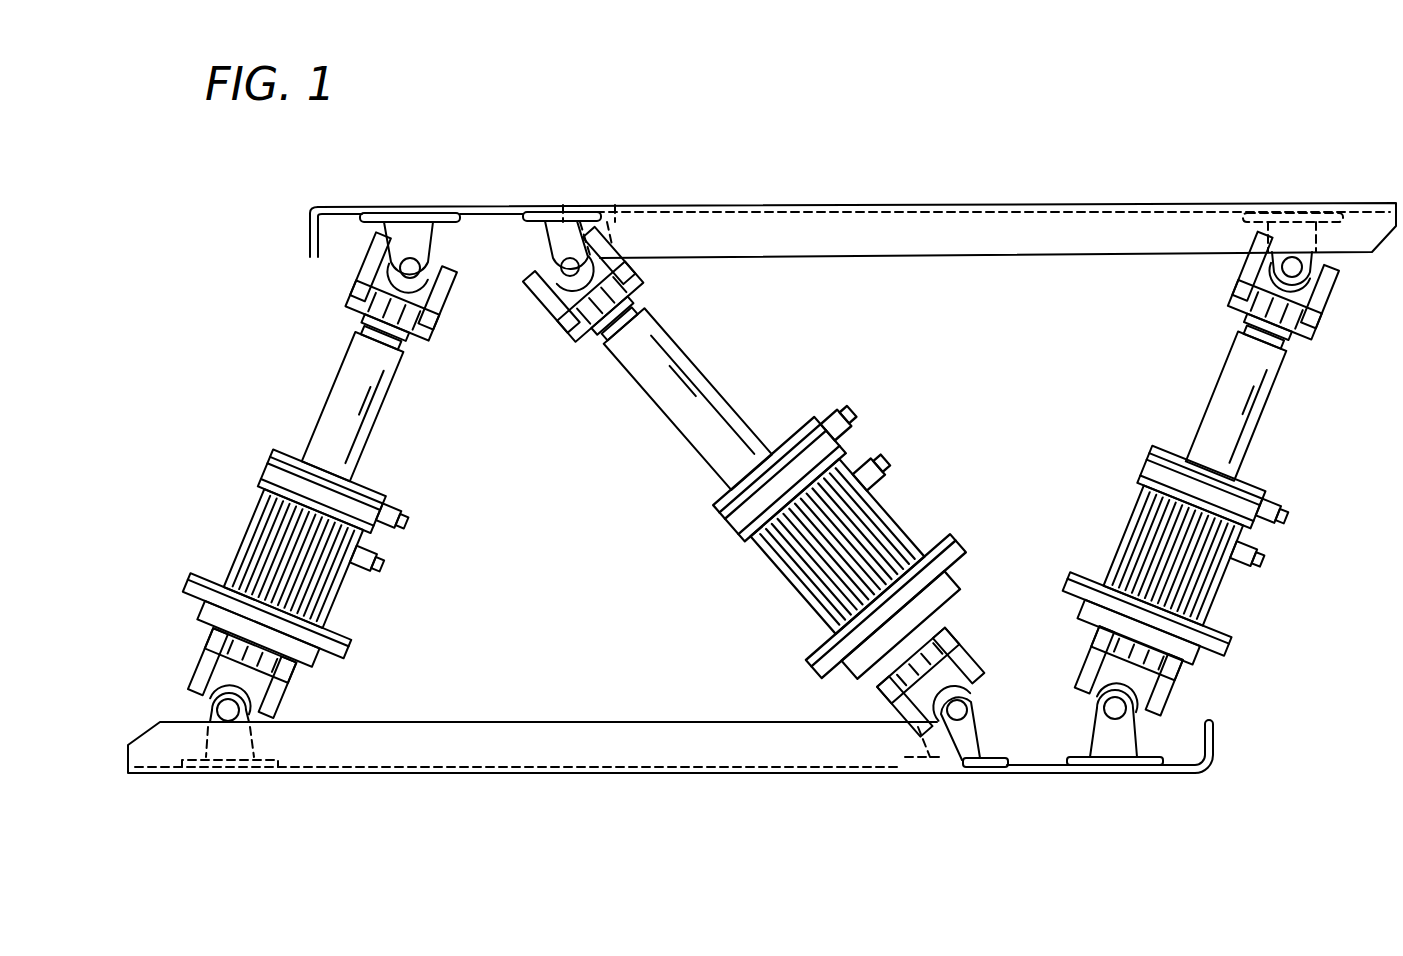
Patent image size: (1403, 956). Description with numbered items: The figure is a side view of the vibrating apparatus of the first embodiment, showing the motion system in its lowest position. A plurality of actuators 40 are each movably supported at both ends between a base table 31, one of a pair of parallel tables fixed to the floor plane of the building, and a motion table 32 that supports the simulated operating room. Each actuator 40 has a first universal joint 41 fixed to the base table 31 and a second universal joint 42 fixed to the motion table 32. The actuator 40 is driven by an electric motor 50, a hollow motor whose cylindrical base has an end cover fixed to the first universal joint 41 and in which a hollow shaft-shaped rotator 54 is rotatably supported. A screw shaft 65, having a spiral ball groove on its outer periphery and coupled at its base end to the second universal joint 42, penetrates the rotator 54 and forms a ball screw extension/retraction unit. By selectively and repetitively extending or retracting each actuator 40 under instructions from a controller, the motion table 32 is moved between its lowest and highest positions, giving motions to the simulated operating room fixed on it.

The base table 31 is at (520, 775).
The motion table 32 is at (843, 207).
The actuator 40 is at (287, 432).
The first universal joint 41 is at (200, 690).
The second universal joint 42 is at (372, 294).
The electric motor 50 is at (248, 520).
The rotator 54 is at (372, 430).
The screw shaft 65 is at (372, 333).